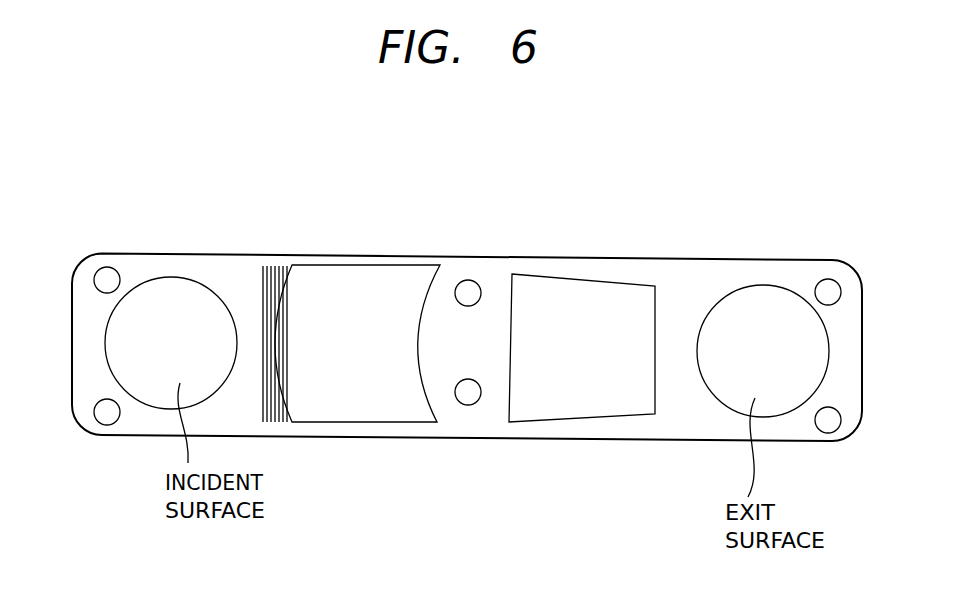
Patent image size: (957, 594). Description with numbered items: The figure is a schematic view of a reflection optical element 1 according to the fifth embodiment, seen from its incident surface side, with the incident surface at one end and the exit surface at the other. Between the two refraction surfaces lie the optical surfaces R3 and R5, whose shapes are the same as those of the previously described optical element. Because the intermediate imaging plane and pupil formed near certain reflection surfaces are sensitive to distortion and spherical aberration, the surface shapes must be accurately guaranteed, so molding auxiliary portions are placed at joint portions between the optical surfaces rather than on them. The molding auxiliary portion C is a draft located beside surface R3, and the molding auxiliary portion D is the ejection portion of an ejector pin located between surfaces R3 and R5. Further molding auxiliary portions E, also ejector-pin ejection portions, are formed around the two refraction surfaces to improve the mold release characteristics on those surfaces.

The reflection optical element 1 is at (583, 183).
The molding auxiliary portions E is at (105, 408).
The molding auxiliary portion C is at (285, 264).
The molding auxiliary portion D is at (475, 323).
The reflection surface R3 is at (382, 375).
The reflection surface R5 is at (558, 373).